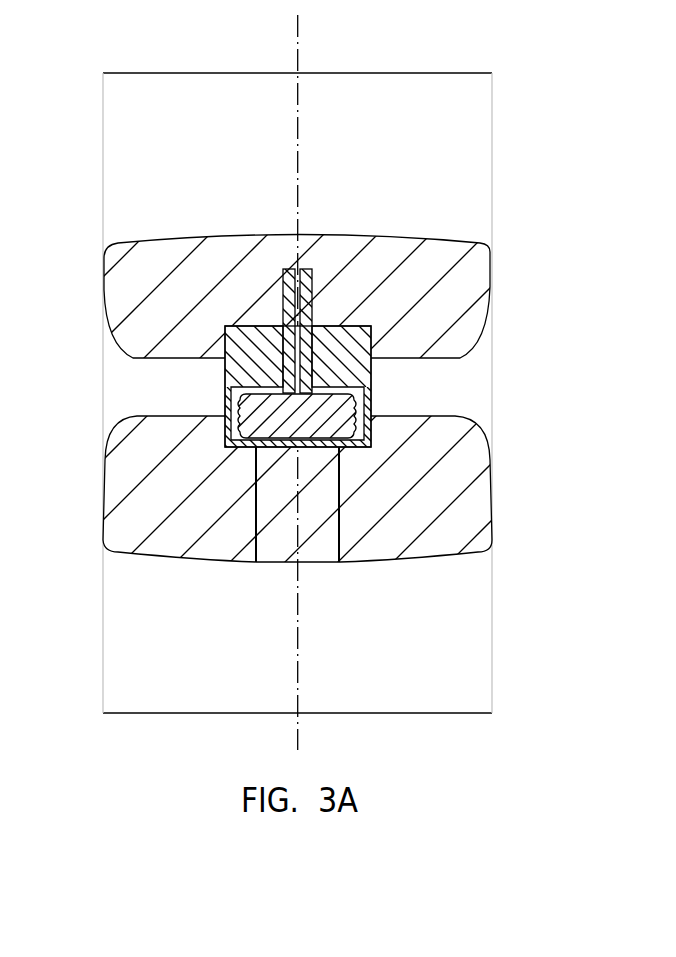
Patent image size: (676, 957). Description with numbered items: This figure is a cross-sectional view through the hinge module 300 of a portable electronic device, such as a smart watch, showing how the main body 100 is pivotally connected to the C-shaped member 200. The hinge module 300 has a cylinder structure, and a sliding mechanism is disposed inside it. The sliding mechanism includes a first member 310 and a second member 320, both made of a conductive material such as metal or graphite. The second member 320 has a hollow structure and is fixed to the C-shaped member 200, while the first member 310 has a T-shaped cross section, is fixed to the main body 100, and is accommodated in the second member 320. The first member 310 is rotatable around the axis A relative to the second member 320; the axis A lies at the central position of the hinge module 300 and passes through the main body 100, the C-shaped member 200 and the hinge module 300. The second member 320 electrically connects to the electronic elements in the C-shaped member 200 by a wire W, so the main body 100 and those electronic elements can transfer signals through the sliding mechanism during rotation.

The main body 100 is at (494, 164).
The C-shaped member 200 is at (494, 625).
The hinge module 300 is at (297, 358).
The first member 310 is at (268, 418).
The second member 320 is at (255, 371).
The wire W is at (258, 507).
The axis A is at (298, 42).